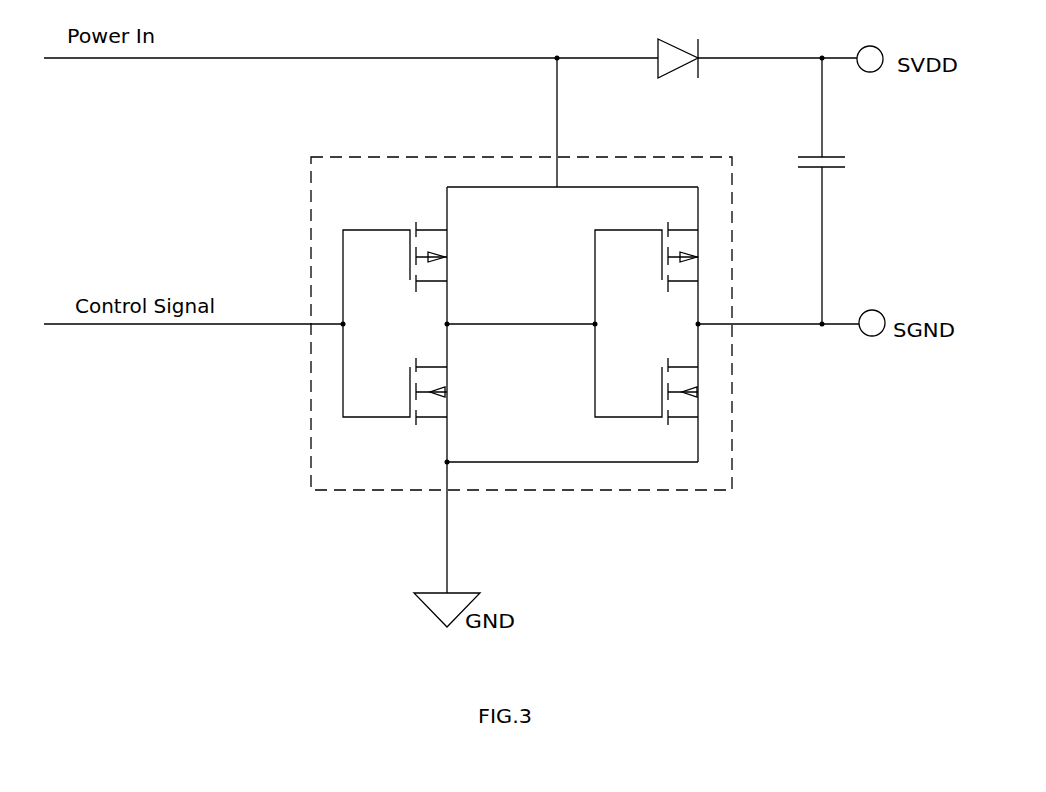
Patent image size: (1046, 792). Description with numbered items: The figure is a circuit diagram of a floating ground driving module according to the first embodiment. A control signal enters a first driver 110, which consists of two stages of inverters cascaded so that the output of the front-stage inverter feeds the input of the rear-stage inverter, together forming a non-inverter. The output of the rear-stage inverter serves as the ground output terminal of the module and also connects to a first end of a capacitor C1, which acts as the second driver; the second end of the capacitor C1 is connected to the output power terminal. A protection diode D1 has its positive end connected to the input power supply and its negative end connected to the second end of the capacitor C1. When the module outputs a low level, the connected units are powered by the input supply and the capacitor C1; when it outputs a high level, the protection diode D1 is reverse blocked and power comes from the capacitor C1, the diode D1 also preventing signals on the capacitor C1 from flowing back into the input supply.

The first driver 110 is at (402, 157).
The protection diode D1 is at (678, 46).
The capacitor C1 is at (840, 191).